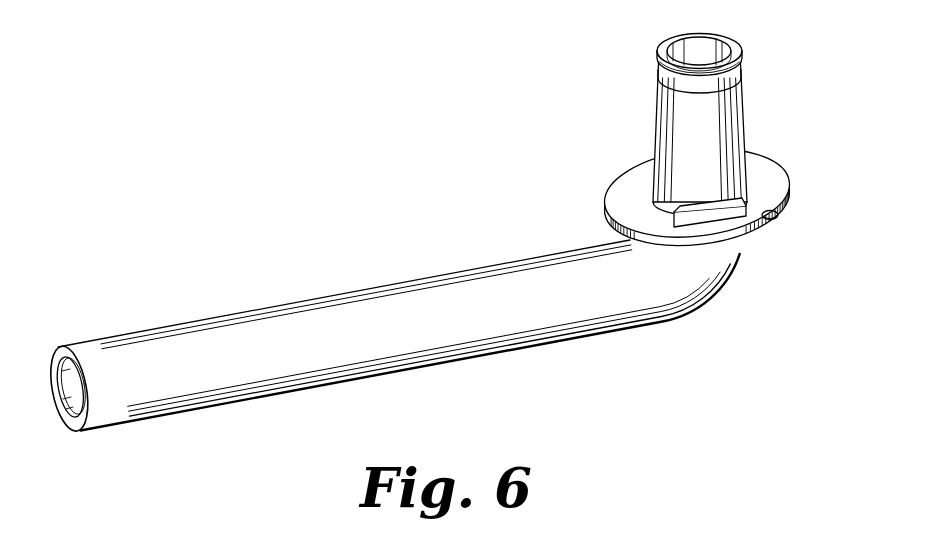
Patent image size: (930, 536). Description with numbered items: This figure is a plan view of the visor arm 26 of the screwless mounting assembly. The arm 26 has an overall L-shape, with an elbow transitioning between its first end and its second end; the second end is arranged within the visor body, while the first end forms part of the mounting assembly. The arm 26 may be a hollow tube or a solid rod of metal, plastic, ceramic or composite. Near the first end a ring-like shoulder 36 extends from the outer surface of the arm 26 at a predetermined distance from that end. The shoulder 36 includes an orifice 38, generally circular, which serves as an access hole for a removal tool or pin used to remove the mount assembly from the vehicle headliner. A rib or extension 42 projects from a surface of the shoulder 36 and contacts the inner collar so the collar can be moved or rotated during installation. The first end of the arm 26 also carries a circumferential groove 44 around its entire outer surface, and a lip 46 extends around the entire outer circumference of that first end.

The arm 26 is at (330, 297).
The shoulder 36 is at (628, 207).
The orifice 38 is at (773, 210).
The extension 42 is at (703, 210).
The circumferential groove 44 is at (743, 82).
The lip 46 is at (695, 113).